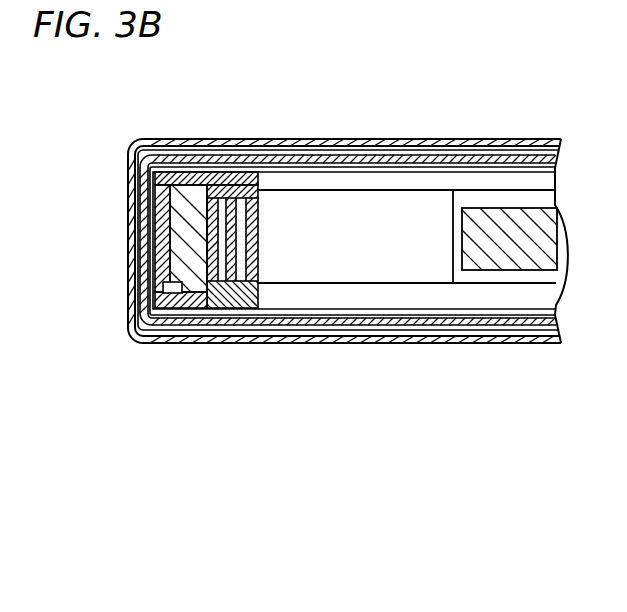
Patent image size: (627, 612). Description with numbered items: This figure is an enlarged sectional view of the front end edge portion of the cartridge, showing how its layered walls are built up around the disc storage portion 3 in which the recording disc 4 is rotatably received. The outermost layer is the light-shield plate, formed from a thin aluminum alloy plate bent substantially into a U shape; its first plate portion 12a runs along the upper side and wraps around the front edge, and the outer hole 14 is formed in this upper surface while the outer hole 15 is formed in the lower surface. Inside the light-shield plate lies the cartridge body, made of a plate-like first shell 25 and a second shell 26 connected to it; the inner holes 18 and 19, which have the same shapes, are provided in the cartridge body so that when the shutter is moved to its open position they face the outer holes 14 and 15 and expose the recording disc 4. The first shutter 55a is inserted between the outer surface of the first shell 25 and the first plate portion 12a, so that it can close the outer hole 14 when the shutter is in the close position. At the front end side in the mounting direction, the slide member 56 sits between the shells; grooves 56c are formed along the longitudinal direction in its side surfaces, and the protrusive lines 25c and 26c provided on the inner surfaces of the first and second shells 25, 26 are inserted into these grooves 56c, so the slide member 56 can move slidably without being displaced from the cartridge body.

The disc storage portion 3 is at (486, 200).
The recording disc 4 is at (555, 237).
The first plate portion 12a is at (205, 139).
The outer hole 14 is at (268, 139).
The outer hole 15 is at (263, 337).
The inner hole 18 is at (262, 178).
The inner hole 19 is at (267, 302).
The first shell 25 is at (416, 177).
The protrusive line 25c is at (163, 205).
The second shell 26 is at (438, 307).
The protrusive line 26c is at (163, 275).
The first shutter 55a is at (362, 140).
The slide member 56 is at (163, 233).
The groove 56c is at (170, 298).